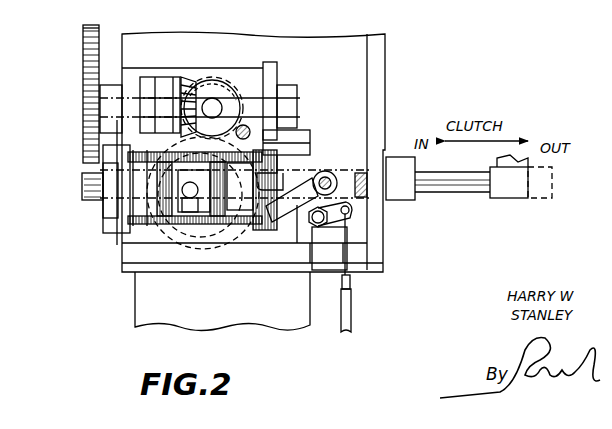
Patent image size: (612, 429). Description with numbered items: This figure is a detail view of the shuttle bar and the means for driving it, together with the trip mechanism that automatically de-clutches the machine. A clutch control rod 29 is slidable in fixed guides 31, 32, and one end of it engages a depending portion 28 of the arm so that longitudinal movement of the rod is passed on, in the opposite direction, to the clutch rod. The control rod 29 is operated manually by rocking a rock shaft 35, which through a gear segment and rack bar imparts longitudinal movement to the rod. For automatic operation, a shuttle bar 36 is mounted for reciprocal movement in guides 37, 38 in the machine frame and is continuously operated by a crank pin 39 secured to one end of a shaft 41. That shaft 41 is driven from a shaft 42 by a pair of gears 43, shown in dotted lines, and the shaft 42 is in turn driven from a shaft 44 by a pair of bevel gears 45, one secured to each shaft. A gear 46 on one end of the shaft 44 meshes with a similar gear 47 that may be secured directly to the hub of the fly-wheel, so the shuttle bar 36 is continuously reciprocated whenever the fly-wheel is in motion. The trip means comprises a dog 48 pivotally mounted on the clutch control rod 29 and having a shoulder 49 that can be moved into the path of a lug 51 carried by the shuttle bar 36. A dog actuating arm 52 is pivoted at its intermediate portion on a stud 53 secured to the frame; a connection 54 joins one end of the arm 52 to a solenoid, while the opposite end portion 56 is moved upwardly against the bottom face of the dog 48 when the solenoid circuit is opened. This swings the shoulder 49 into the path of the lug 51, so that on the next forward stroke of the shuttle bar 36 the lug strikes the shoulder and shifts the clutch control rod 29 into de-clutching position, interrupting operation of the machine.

The depending portion 28 is at (520, 163).
The clutch control rod 29 is at (447, 190).
The fixed guide 31 is at (392, 202).
The fixed guide 32 is at (110, 187).
The rock shaft 35 is at (248, 128).
The shuttle bar 36 is at (172, 207).
The guide 37 is at (120, 146).
The guide 38 is at (135, 228).
The crank pin 39 is at (185, 232).
The shaft 41 is at (200, 225).
The shaft 42 is at (215, 100).
The pair of gears 43 is at (172, 133).
The shaft 44 is at (257, 100).
The bevel gears 45 is at (188, 77).
The gear 46 is at (86, 72).
The gear 47 is at (83, 34).
The dog 48 is at (312, 180).
The shoulder 49 is at (290, 194).
The lug 51 is at (278, 172).
The dog actuating arm 52 is at (348, 216).
The stud 53 is at (316, 227).
The connection 54 is at (347, 252).
The end portion 56 is at (297, 222).